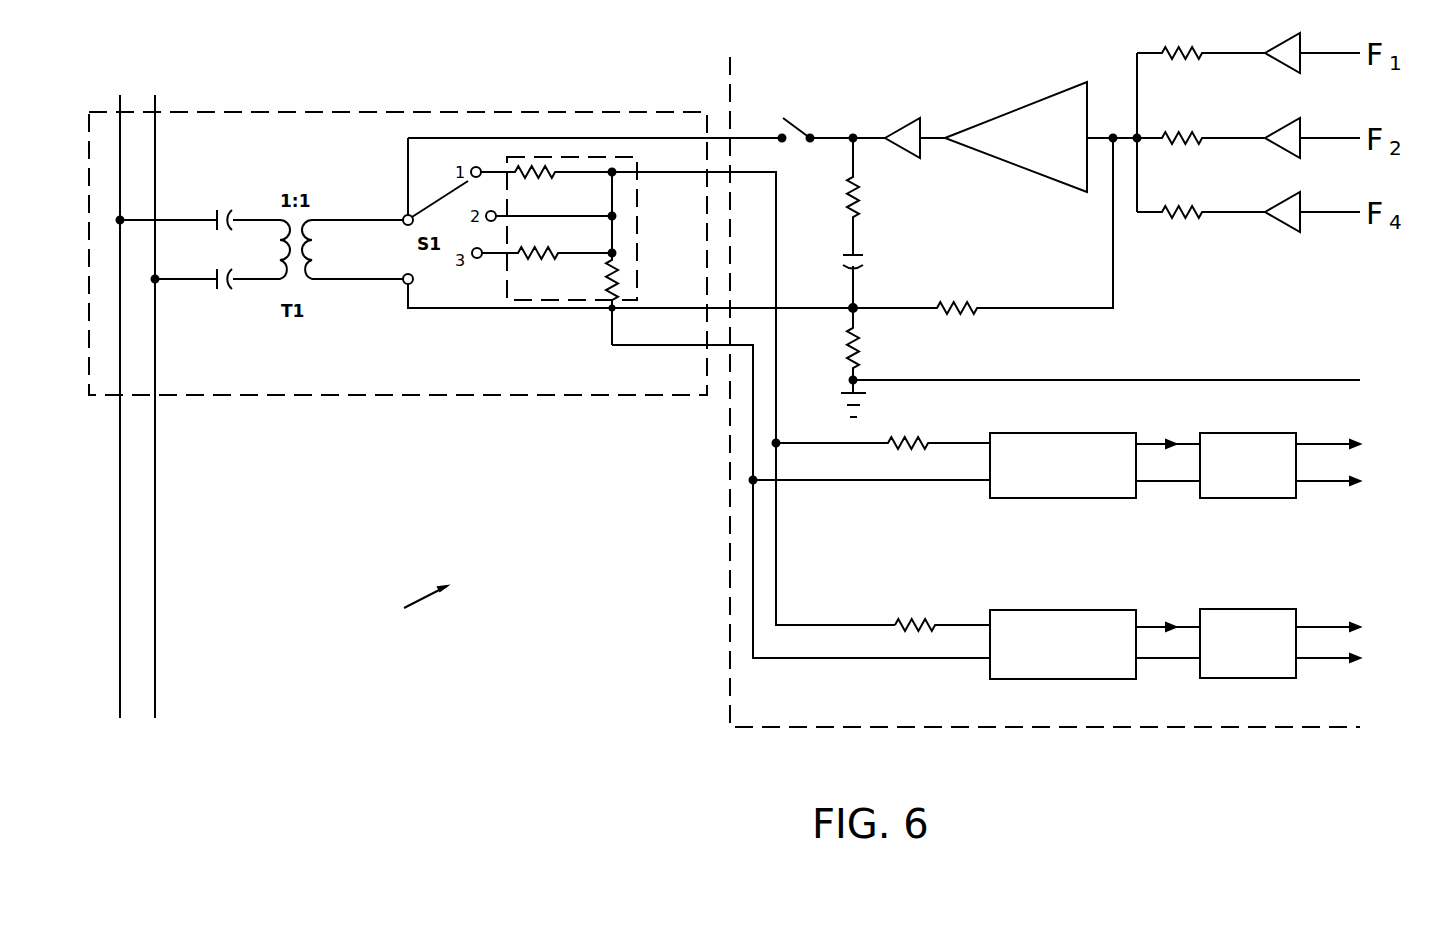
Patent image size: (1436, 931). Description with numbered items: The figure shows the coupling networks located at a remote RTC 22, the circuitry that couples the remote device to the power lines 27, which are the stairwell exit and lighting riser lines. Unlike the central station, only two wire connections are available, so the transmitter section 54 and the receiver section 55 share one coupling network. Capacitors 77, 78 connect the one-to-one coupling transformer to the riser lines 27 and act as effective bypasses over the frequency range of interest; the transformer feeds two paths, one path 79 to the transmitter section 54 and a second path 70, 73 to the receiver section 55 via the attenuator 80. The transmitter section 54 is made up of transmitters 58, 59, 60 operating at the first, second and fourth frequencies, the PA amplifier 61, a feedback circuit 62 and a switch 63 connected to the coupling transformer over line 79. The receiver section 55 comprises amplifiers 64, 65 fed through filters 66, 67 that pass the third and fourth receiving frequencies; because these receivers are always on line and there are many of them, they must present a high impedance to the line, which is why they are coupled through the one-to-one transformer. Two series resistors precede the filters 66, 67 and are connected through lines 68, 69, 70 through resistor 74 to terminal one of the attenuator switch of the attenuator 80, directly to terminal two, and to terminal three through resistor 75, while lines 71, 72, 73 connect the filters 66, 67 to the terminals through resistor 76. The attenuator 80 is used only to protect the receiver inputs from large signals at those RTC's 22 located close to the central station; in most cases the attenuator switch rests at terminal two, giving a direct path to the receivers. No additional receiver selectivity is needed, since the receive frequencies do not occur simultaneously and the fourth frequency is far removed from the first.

The remote RTC 22 is at (411, 608).
The power lines 27 is at (125, 515).
The transmitter section 54 is at (862, 317).
The receiver section 55 is at (720, 652).
The transmitter 58 is at (1218, 52).
The transmitter 59 is at (1218, 135).
The transmitter 60 is at (1225, 210).
The PA amplifier 61 is at (988, 113).
The feedback circuit 62 is at (862, 247).
The switch 63 is at (798, 120).
The amplifier 64 is at (1250, 502).
The amplifier 65 is at (1267, 608).
The filter 66 is at (1045, 498).
The filter 67 is at (1060, 610).
The line 68 is at (810, 442).
The line 69 is at (828, 620).
The line 70 is at (782, 368).
The line 71 is at (842, 665).
The line 72 is at (853, 485).
The line 73 is at (746, 414).
The resistor 74 is at (545, 163).
The resistor 75 is at (543, 263).
The resistor 76 is at (623, 277).
The capacitor 77 is at (212, 217).
The capacitor 78 is at (213, 285).
The line 79 is at (472, 138).
The attenuator 80 is at (585, 210).